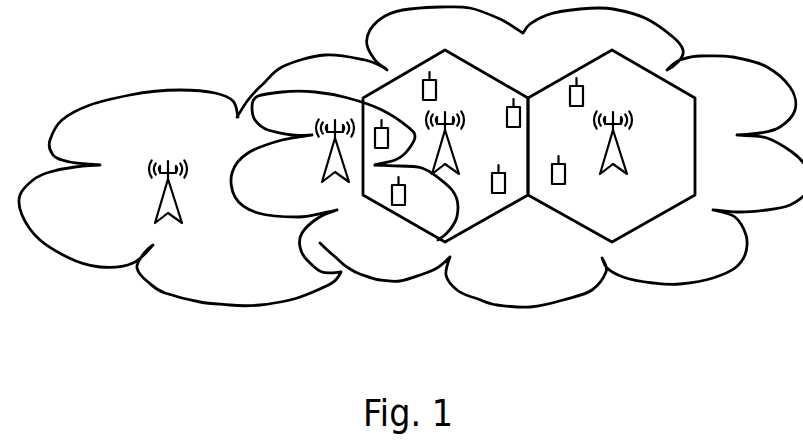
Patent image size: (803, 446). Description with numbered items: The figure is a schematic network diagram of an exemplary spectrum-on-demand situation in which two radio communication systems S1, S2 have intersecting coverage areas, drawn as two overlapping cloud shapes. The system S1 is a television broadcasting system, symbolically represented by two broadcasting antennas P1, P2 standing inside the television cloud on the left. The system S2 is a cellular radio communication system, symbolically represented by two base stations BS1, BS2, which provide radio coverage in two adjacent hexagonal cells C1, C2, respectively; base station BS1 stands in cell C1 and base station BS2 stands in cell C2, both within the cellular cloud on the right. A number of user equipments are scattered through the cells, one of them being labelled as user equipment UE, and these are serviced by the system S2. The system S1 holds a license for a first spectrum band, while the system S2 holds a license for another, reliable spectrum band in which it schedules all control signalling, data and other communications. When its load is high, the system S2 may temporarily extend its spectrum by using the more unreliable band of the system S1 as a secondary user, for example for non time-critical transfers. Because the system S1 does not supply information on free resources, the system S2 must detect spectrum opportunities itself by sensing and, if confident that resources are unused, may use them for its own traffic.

The television broadcasting system S1 is at (230, 306).
The cellular radio communication system S2 is at (522, 308).
The cell C1 is at (418, 66).
The cell C2 is at (656, 217).
The broadcasting antenna P1 is at (327, 162).
The broadcasting antenna P2 is at (160, 201).
The base station BS1 is at (450, 142).
The base station BS2 is at (619, 143).
The user equipment UE is at (504, 194).